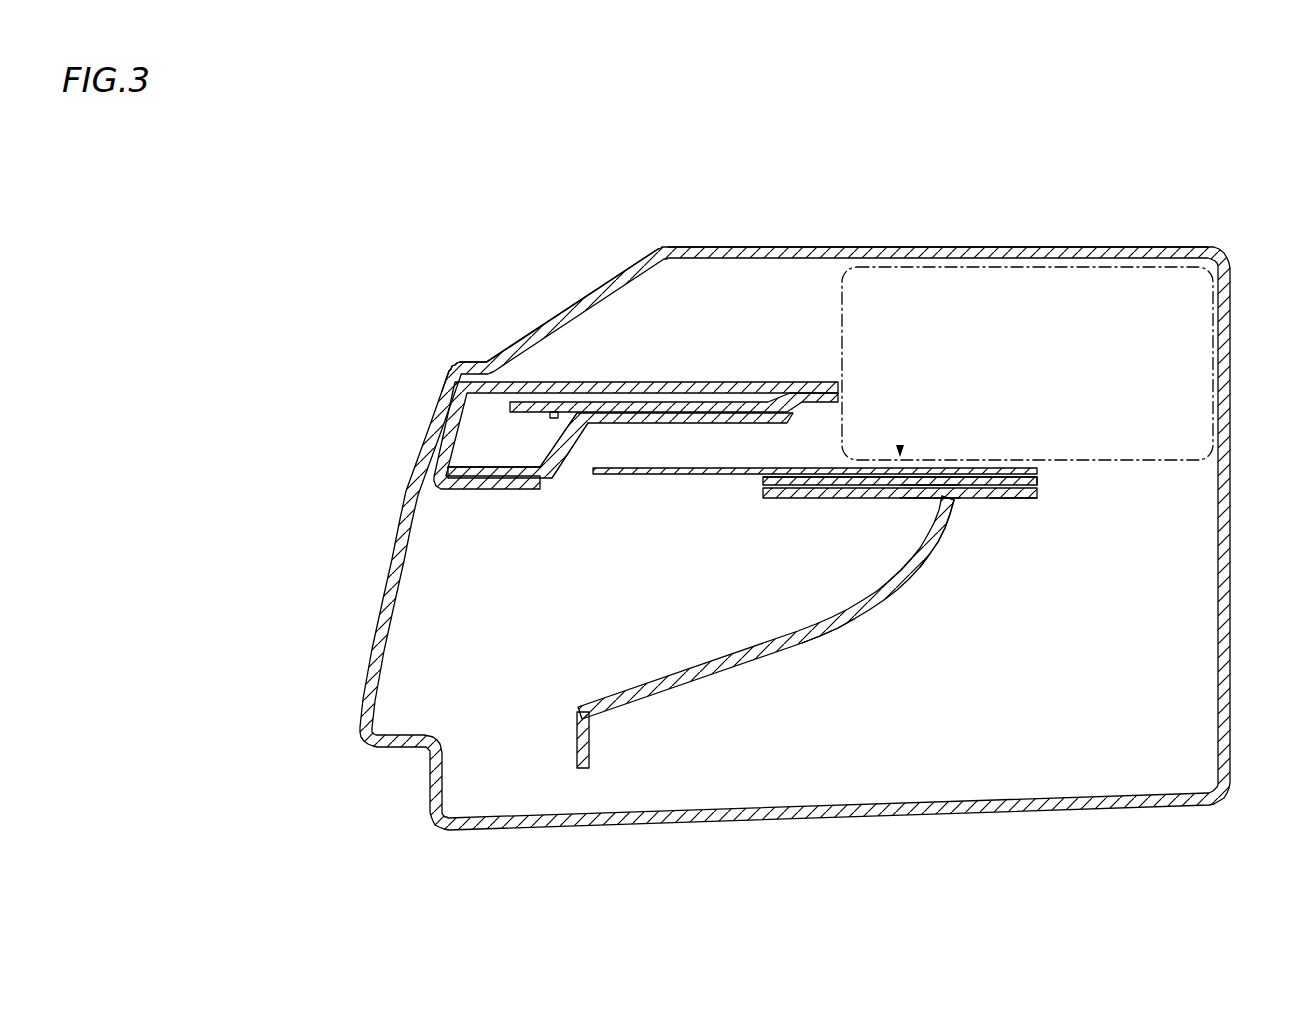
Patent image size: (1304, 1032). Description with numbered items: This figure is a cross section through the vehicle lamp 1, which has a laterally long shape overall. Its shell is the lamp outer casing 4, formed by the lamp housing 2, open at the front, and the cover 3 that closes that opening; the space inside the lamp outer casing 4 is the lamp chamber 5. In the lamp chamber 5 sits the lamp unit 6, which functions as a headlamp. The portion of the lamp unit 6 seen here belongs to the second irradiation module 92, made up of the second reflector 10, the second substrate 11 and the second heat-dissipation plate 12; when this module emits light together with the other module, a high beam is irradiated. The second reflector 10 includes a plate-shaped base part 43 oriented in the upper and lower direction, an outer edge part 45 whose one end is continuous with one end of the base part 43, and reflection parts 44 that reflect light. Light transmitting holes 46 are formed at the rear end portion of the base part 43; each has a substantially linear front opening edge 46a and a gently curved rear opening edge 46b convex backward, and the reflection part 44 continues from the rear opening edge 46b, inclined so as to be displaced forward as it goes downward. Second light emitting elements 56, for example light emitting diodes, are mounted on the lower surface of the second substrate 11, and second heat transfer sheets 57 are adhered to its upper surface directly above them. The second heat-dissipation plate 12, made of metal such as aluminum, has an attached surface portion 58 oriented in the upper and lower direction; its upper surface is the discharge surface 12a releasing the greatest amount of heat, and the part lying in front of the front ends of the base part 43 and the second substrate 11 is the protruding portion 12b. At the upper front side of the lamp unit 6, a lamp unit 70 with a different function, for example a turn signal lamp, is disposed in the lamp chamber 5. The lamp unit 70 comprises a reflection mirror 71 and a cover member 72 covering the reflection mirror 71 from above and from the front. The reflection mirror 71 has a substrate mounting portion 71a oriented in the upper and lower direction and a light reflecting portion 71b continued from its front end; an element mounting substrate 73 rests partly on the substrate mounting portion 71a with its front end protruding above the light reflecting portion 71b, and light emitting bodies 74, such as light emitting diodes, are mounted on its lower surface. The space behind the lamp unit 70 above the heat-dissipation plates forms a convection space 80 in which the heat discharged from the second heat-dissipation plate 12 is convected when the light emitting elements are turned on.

The vehicle lamp 1 is at (407, 190).
The lamp housing 2 is at (765, 247).
The cover 3 is at (650, 258).
The lamp outer casing 4 is at (672, 178).
The lamp chamber 5 is at (505, 603).
The lamp unit 6 is at (853, 613).
The second reflector 10 is at (815, 632).
The second substrate 11 is at (1037, 481).
The second heat-dissipation plate 12 is at (995, 478).
The discharge surface 12a is at (975, 477).
The protruding portion 12b is at (603, 473).
The base part 43 is at (1037, 489).
The reflection part 44 is at (718, 670).
The outer edge part 45 is at (583, 768).
The light transmitting hole 46 is at (937, 500).
The front opening edge 46a is at (913, 498).
The rear opening edge 46b is at (937, 500).
The second light emitting element 56 is at (940, 498).
The second heat transfer sheet 57 is at (927, 478).
The attached surface portion 58 is at (1023, 478).
The lamp unit 70 is at (648, 383).
The reflection mirror 71 is at (545, 427).
The substrate mounting portion 71a is at (575, 470).
The light reflecting portion 71b is at (557, 448).
The cover member 72 is at (557, 437).
The element mounting substrate 73 is at (447, 373).
The light emitting body 74 is at (506, 407).
The convection space 80 is at (955, 267).
The second irradiation module 92 is at (900, 450).